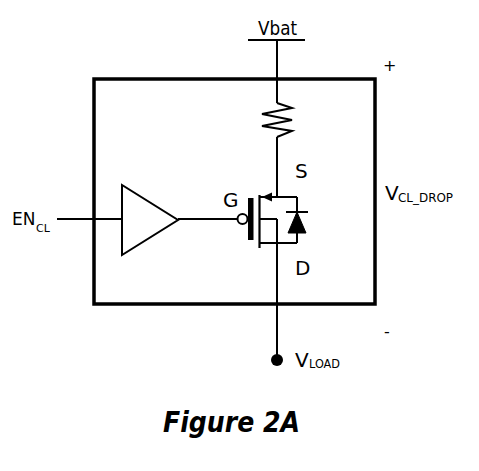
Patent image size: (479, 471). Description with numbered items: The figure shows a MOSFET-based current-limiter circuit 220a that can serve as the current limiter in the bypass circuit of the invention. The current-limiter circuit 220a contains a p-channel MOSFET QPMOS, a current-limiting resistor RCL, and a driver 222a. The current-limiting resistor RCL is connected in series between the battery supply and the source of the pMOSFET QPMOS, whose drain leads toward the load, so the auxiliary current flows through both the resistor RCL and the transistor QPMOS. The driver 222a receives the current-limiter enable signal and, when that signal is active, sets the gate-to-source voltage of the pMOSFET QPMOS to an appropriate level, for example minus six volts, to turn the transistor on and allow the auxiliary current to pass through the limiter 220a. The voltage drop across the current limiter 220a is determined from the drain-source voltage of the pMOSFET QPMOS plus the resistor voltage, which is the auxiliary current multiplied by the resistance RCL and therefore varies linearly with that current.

The current-limiter circuit 220a is at (234, 177).
The driver 222a is at (150, 209).
The current-limiting resistor RCL is at (296, 117).
The p-channel MOSFET QPMOS is at (302, 221).